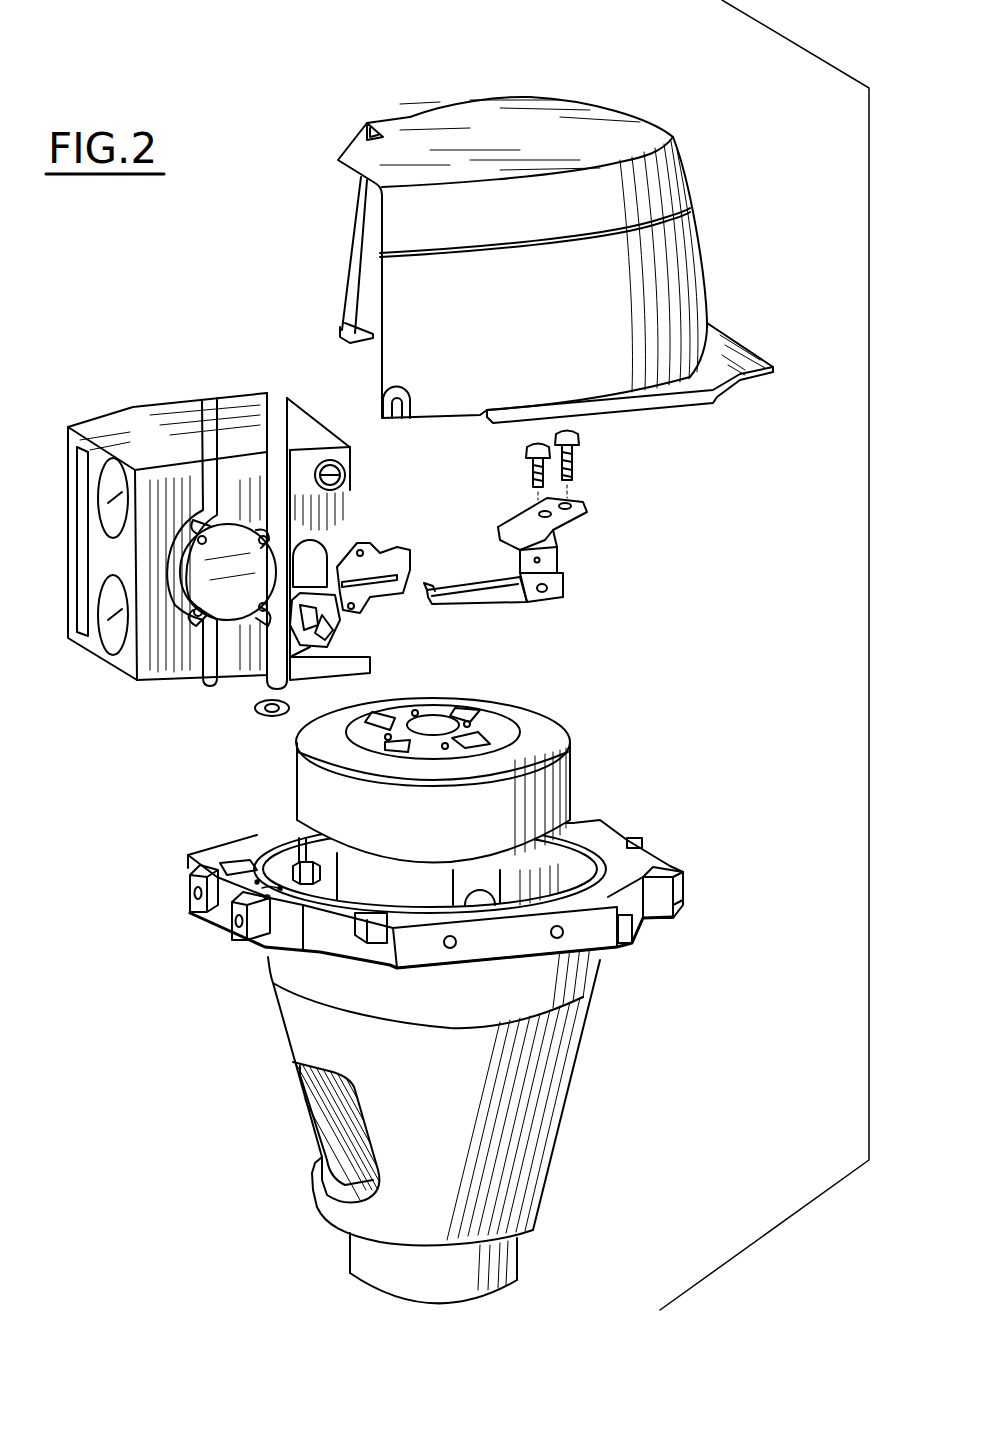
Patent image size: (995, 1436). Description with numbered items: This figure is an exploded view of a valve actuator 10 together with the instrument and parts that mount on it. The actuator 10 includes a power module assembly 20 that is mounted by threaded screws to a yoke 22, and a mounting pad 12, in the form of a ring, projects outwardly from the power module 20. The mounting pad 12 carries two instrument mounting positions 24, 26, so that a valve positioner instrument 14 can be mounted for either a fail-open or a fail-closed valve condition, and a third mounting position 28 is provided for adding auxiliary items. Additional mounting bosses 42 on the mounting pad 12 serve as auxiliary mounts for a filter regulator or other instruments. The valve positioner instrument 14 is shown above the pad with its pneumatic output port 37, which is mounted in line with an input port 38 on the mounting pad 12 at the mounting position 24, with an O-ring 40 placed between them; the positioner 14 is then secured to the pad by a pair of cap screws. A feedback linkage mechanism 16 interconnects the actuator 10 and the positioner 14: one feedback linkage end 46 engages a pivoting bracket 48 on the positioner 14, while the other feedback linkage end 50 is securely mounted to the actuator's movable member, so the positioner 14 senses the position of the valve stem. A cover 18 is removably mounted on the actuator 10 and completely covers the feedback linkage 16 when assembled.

The valve actuator 10 is at (603, 747).
The mounting pad 12 is at (253, 830).
The valve positioner instrument 14 is at (117, 437).
The feedback linkage mechanism 16 is at (572, 566).
The cover 18 is at (703, 260).
The power module assembly 20 is at (560, 707).
The yoke 22 is at (550, 1103).
The instrument mounting position 24 is at (187, 867).
The instrument mounting position 26 is at (613, 827).
The third mounting position 28 is at (593, 937).
The pneumatic output port 37 is at (237, 673).
The input port 38 is at (227, 907).
The O-ring 40 is at (268, 716).
The mounting bosses 42 is at (190, 883).
The feedback linkage end 46 is at (463, 587).
The pivoting bracket 48 is at (380, 553).
The feedback linkage end 50 is at (587, 513).